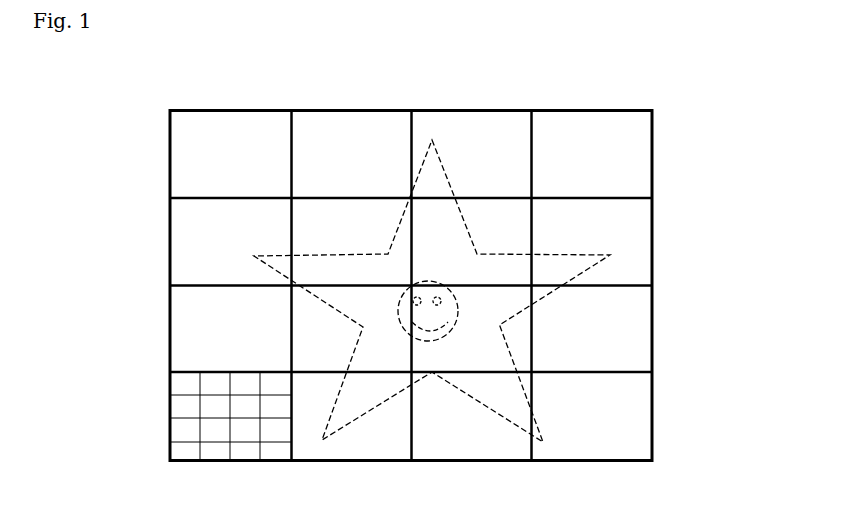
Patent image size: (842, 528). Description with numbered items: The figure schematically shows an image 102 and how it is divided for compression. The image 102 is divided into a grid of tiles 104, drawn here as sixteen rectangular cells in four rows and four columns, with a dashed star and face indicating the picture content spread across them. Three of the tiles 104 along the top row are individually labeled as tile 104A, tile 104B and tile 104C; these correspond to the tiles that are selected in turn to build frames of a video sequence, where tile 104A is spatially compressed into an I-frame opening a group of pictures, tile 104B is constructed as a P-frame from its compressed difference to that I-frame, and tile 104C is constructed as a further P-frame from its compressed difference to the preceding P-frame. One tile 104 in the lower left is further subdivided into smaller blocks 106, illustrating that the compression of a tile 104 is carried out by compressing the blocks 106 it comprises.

The image 102 is at (652, 159).
The tiles 104 is at (632, 342).
The tile 104A is at (241, 131).
The tile 104B is at (348, 131).
The tile 104C is at (460, 130).
The blocks 106 is at (212, 450).